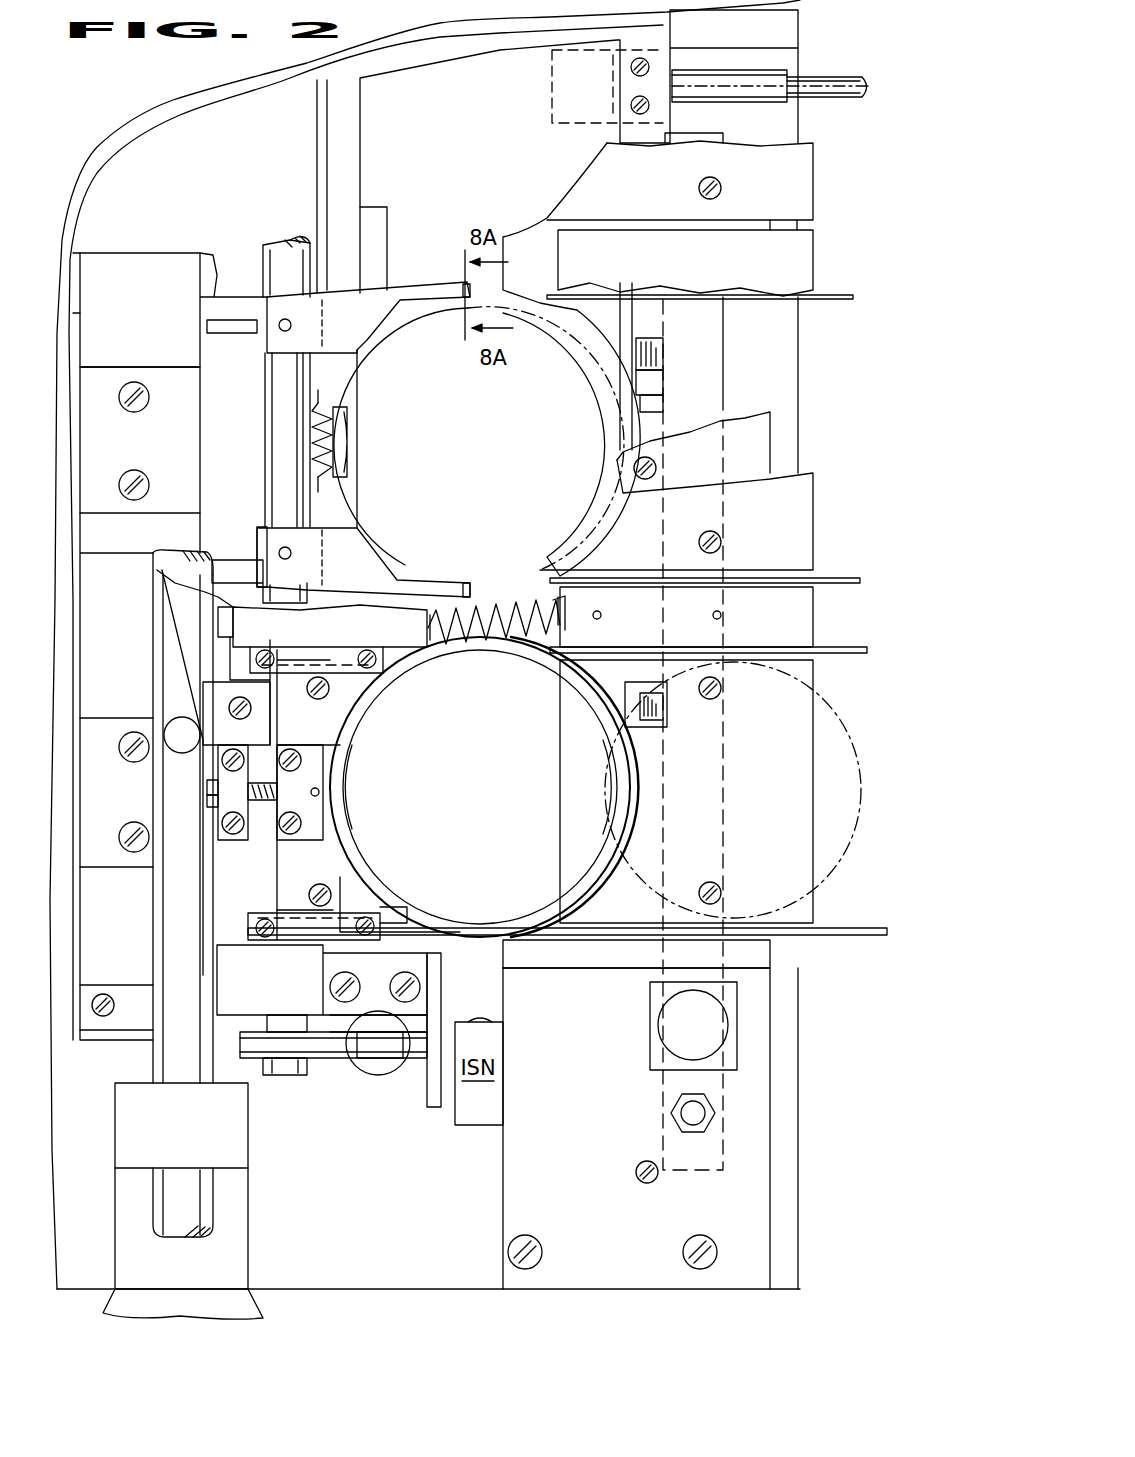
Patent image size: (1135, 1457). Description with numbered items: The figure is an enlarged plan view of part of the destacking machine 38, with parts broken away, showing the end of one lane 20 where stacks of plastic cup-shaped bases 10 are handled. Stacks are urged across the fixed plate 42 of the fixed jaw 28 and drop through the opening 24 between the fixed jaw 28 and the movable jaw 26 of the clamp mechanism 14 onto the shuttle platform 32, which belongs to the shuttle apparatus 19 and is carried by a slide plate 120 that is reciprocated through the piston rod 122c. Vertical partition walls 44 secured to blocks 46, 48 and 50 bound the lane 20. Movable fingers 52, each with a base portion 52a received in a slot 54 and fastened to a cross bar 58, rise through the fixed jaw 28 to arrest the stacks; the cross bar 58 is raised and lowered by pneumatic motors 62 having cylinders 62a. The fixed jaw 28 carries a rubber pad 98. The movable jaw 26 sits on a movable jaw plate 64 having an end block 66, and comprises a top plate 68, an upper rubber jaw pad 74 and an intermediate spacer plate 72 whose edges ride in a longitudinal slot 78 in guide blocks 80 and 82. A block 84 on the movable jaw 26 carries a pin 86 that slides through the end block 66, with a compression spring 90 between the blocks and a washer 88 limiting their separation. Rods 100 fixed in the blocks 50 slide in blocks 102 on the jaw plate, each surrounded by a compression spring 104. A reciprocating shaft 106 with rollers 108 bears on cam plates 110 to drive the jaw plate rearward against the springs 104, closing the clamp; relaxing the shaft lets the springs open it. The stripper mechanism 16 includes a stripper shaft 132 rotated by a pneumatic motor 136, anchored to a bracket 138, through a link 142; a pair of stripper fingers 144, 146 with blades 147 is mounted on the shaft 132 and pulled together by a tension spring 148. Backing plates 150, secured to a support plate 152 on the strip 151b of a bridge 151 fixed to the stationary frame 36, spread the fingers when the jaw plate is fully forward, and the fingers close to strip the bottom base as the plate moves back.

The plastic cup-shaped base 10 is at (595, 338).
The clamp mechanism 14 is at (372, 851).
The stripper mechanism 16 is at (384, 534).
The shuttle apparatus 19 is at (792, 70).
The lane 20 is at (826, 428).
The opening 24 is at (553, 153).
The movable jaw 26 is at (350, 766).
The fixed jaw 28 is at (600, 818).
The shuttle platform 32 is at (462, 91).
The stationary frame 36 is at (802, 30).
The destacking machine 38 is at (193, 93).
The fixed plate 42 is at (812, 183).
The vertical partition wall 44 is at (823, 298).
The block 46 is at (601, 963).
The block 48 is at (812, 258).
The block 50 is at (746, 625).
The movable finger 52 is at (657, 345).
The base portion 52a is at (664, 378).
The slot 54 is at (664, 405).
The cross bar 58 is at (718, 358).
The pneumatic motor 62 is at (679, 1028).
The cylinder 62a is at (658, 1025).
The movable jaw plate 64 is at (259, 991).
The end block 66 is at (248, 838).
The top plate 68 is at (291, 726).
The intermediate spacer plate 72 is at (390, 652).
The upper rubber jaw pad 74 is at (344, 793).
The longitudinal slot 78 is at (297, 655).
The guide block 80 is at (318, 935).
The guide block 82 is at (331, 652).
The block 84 is at (317, 838).
The pin 86 is at (207, 787).
The washer 88 is at (213, 803).
The compression spring 90 is at (264, 782).
The rubber pad 98 is at (620, 752).
The rod 100 is at (563, 605).
The block 102 is at (240, 615).
The compression spring 104 is at (486, 660).
The reciprocating shaft 106 is at (160, 907).
The roller 108 is at (170, 722).
The cam plate 110 is at (190, 683).
The slide plate 120 is at (176, 158).
The piston rod 122c is at (832, 94).
The stripper shaft 132 is at (282, 246).
The pneumatic motor 136 is at (360, 1068).
The bracket 138 is at (432, 1100).
The link 142 is at (344, 1060).
The stripper finger 144 is at (368, 325).
The stripper finger 146 is at (343, 562).
The blade 147 is at (465, 300).
The tension spring 148 is at (349, 431).
The backing plate 150 is at (263, 345).
The bridge 151 is at (159, 250).
The strip 151b is at (104, 266).
The support plate 152 is at (158, 445).